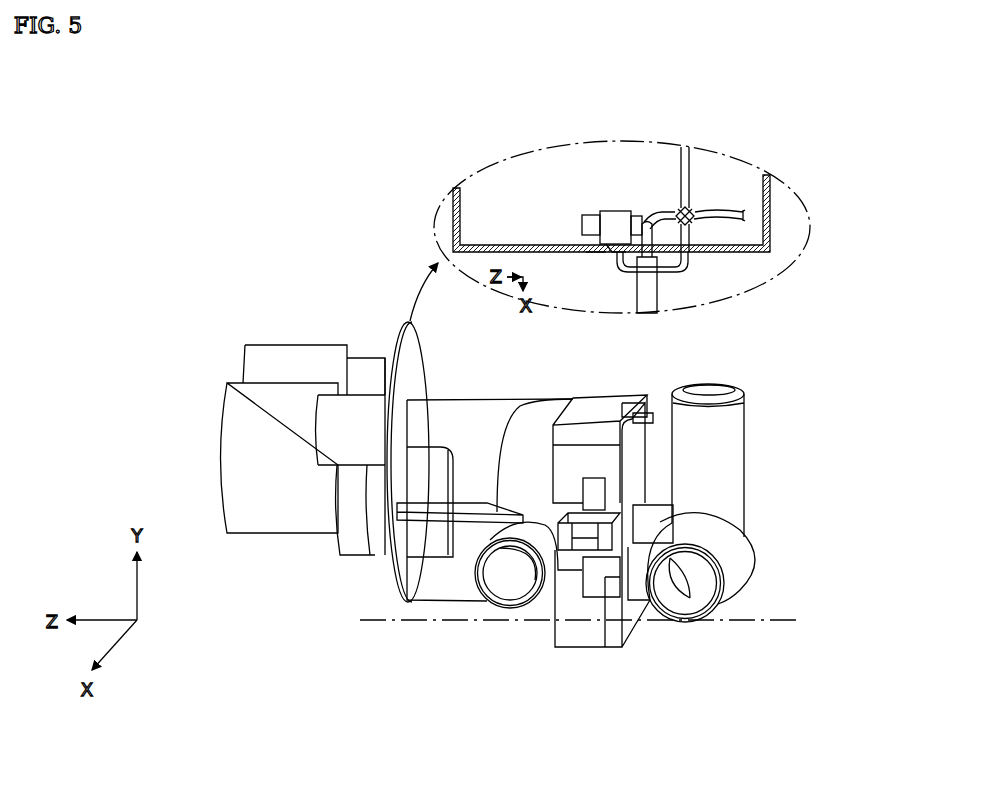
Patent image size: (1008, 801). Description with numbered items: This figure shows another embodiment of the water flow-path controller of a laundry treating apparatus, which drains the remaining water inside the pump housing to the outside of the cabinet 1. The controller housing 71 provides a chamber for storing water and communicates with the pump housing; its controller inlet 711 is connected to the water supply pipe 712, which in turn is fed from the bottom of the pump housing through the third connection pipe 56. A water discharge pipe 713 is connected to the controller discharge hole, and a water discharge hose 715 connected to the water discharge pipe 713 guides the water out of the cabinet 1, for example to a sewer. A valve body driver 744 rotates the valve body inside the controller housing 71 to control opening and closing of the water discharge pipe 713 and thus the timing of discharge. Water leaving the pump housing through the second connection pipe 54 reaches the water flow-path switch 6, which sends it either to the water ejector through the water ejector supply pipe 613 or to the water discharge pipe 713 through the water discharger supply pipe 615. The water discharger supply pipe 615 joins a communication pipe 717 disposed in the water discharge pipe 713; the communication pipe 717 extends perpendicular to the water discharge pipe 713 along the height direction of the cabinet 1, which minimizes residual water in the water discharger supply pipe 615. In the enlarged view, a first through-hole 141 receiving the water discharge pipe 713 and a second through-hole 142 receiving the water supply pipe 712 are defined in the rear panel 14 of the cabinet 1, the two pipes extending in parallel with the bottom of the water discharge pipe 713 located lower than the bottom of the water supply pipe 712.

The cabinet 1 is at (771, 210).
The water flow-path switch 6 is at (700, 208).
The rear panel 14 is at (493, 250).
The second connection pipe 54 is at (688, 205).
The third connection pipe 56 is at (690, 254).
The controller housing 71 is at (519, 420).
The first through-hole 141 is at (592, 253).
The second through-hole 142 is at (618, 268).
The water ejector supply pipe 613 is at (723, 208).
The water discharger supply pipe 615 is at (657, 212).
The controller inlet 711 is at (514, 592).
The water supply pipe 712 is at (553, 570).
The water discharge pipe 713 is at (748, 547).
The water discharge hose 715 is at (643, 293).
The communication pipe 717 is at (732, 463).
The valve body driver 744 is at (230, 448).